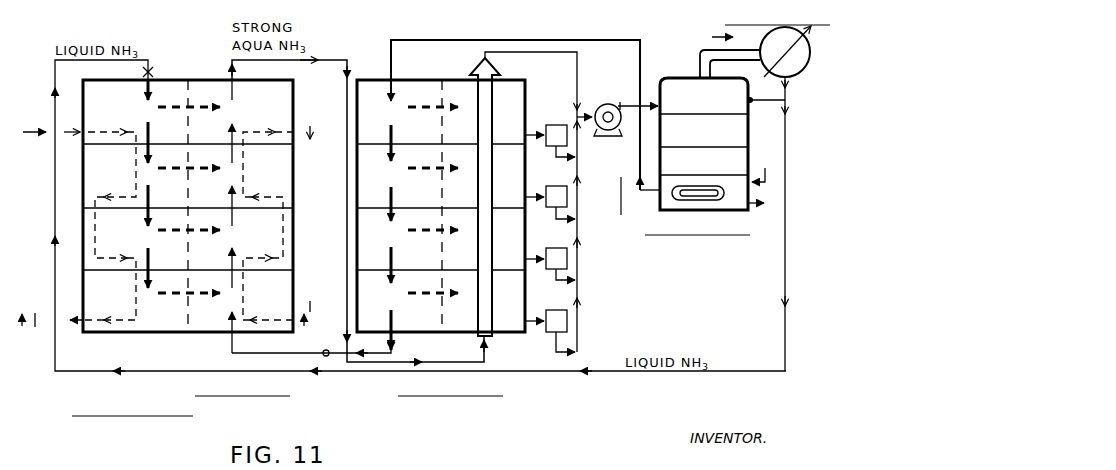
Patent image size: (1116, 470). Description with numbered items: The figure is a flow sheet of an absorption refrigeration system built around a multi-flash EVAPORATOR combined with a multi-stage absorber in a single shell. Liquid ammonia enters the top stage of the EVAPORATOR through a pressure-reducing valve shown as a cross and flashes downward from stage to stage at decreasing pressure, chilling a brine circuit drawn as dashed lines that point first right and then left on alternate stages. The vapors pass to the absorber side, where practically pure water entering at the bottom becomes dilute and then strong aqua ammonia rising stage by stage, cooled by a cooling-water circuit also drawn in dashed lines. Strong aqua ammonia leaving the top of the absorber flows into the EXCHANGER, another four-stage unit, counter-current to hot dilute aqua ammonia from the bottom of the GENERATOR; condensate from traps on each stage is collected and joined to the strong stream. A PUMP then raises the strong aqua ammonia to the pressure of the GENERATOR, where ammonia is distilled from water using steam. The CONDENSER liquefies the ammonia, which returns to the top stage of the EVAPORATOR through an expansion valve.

The evaporator EVAPORATOR is at (170, 248).
The exchanger EXCHANGER is at (466, 227).
The pump PUMP is at (571, 202).
The generator GENERATOR is at (581, 129).
The condenser CONDENSER is at (765, 190).